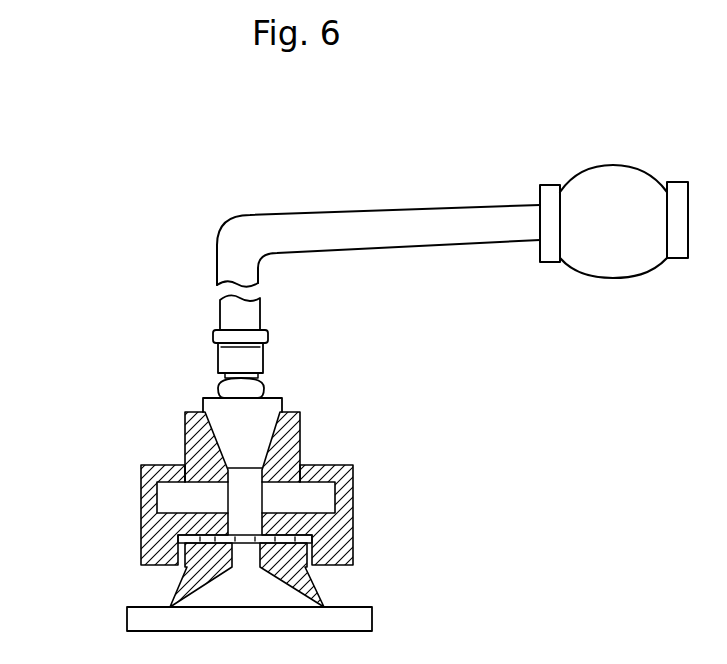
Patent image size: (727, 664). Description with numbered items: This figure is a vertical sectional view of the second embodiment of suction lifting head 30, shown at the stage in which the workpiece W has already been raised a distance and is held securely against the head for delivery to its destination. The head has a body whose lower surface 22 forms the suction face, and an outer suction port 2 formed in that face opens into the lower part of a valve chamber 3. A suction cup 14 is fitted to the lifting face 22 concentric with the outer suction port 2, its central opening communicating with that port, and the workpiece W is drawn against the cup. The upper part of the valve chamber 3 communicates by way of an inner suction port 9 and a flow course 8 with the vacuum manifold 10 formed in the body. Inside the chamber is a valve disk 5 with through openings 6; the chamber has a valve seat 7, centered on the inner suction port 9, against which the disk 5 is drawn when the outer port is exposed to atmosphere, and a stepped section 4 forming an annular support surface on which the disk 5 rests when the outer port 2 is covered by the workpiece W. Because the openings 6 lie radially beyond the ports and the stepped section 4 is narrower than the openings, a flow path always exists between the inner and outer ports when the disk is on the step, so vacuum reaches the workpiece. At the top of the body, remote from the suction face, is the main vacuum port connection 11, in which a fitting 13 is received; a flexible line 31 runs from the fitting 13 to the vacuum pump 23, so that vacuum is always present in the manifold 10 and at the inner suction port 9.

The outer suction port 2 is at (372, 610).
The valve chamber 3 is at (313, 590).
The stepped section 4 is at (185, 566).
The valve disk 5 is at (142, 466).
The through opening 6 is at (142, 502).
The valve seat 7 is at (185, 465).
The flow course 8 is at (302, 436).
The inner suction port 9 is at (300, 408).
The vacuum manifold 10 is at (185, 415).
The main vacuum port connection 11 is at (241, 500).
The fitting 13 is at (248, 510).
The suction cup 14 is at (177, 600).
The lower surface 22 is at (333, 566).
The vacuum pump 23 is at (614, 221).
The lifting head 30 is at (428, 412).
The flexible line 31 is at (432, 226).
The workpiece W is at (127, 628).